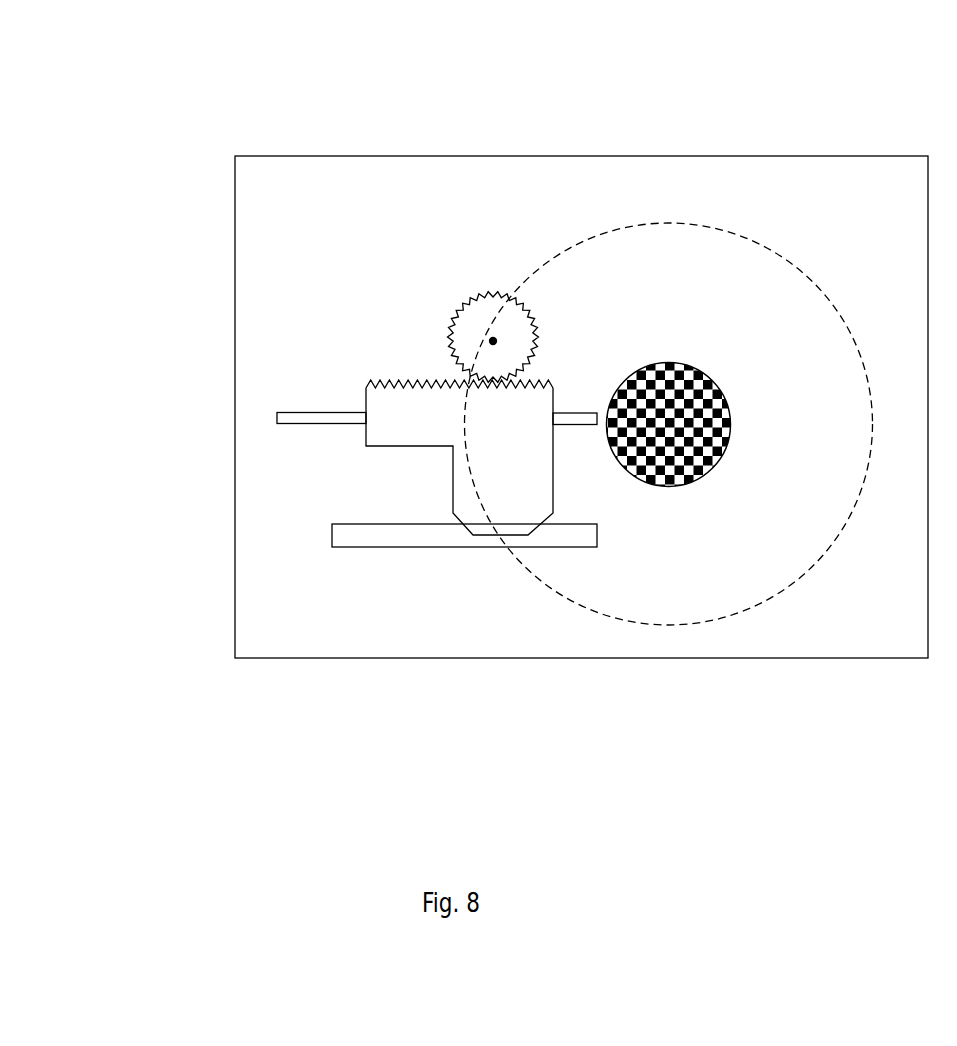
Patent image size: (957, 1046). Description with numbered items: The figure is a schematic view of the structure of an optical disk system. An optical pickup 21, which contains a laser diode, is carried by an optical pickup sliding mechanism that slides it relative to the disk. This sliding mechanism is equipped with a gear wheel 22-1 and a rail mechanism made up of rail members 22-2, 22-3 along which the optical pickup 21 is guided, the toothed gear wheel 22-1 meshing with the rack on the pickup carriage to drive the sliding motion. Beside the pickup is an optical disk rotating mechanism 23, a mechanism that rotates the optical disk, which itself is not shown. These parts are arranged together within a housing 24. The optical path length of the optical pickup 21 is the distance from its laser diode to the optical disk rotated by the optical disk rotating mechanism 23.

The housing 24 is at (325, 156).
The gear wheel 22-1 is at (443, 335).
The rail mechanism 22-2 is at (277, 412).
The rail mechanism 22-3 is at (332, 547).
The optical pickup 21 is at (470, 537).
The optical disk rotating mechanism 23 is at (658, 493).